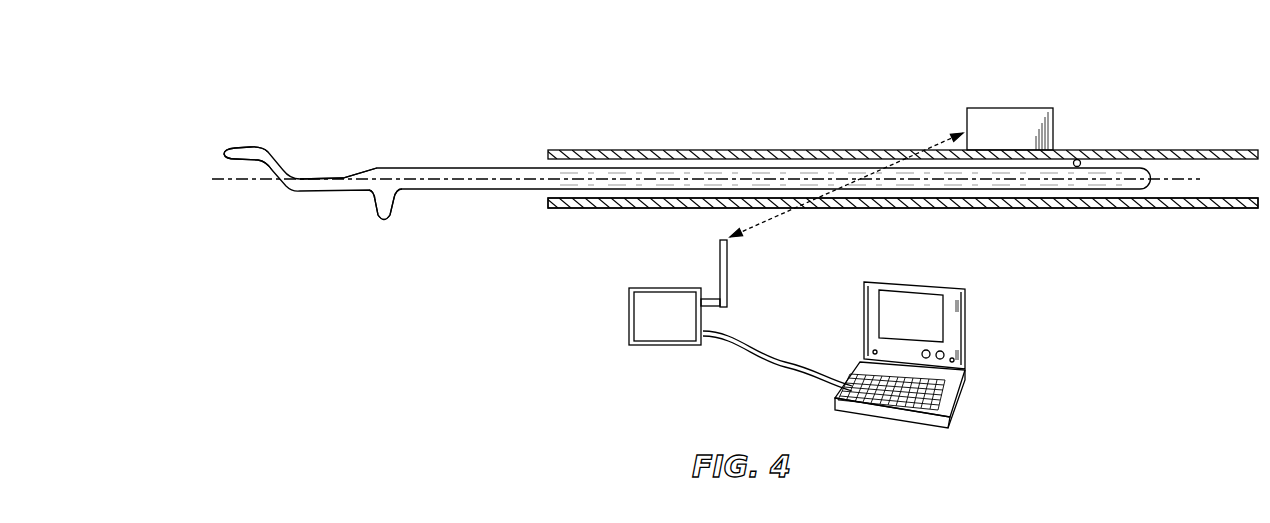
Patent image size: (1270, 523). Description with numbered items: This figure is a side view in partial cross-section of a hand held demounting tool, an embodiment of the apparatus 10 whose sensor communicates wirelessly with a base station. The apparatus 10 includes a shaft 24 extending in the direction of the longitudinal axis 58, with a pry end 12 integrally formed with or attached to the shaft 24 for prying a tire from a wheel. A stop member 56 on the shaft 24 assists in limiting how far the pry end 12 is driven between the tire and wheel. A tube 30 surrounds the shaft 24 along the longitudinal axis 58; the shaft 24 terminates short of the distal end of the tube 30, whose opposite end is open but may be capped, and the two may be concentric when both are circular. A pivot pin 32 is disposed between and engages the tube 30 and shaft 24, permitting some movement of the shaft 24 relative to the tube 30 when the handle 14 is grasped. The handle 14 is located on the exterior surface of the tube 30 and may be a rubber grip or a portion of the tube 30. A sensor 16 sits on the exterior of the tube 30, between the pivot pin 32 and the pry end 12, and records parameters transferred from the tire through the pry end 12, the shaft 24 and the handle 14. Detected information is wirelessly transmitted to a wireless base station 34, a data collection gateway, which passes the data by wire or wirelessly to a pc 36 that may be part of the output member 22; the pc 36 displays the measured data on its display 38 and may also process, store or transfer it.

The apparatus 10 is at (385, 68).
The pry end 12 is at (275, 160).
The handle 14 is at (1148, 150).
The sensor 16 is at (990, 108).
The output member 22 is at (927, 345).
The shaft 24 is at (523, 190).
The tube 30 is at (1082, 206).
The pivot pin 32 is at (1080, 160).
The wireless base station 34 is at (629, 318).
The pc 36 is at (917, 311).
The display 38 is at (890, 321).
The stop member 56 is at (380, 208).
The longitudinal axis 58 is at (446, 180).